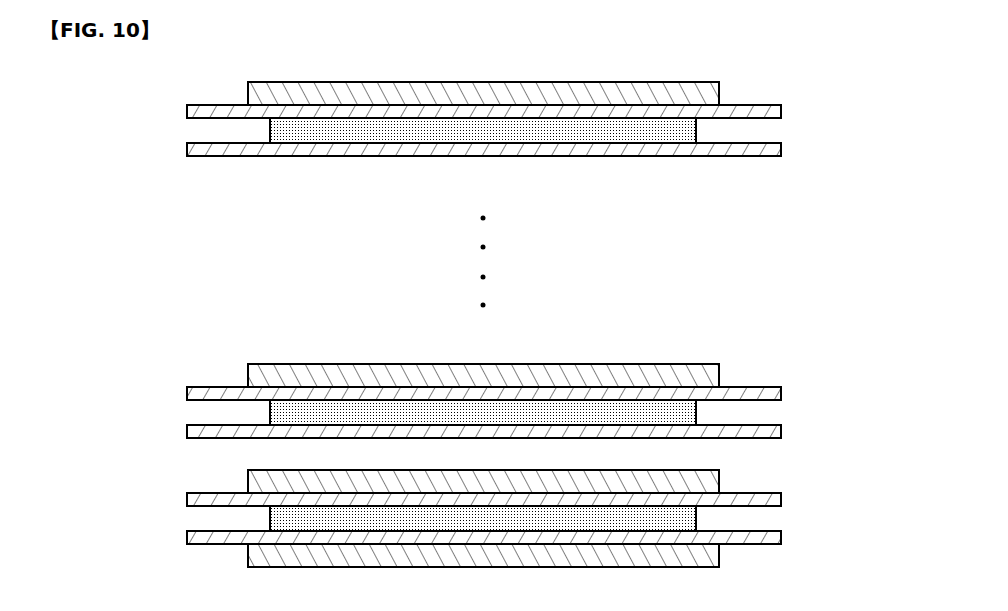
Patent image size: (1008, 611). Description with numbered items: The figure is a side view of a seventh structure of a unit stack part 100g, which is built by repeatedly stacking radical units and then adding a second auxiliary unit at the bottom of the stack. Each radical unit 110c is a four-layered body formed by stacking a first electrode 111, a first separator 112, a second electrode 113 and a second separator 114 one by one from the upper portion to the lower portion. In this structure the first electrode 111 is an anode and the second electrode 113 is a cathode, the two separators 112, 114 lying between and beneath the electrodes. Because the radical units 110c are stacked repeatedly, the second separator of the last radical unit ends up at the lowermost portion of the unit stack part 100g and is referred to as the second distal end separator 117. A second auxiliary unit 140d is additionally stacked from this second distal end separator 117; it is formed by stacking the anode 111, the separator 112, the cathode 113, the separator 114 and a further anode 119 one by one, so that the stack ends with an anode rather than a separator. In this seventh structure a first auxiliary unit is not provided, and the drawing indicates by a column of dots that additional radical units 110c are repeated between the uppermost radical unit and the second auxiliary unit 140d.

The unit stack part 100g is at (785, 85).
The radical unit 110c is at (110, 85).
The second auxiliary unit 140d is at (110, 470).
The first electrode 111 is at (277, 94).
The first separator 112 is at (193, 113).
The second electrode 113 is at (272, 135).
The second separator 114 is at (193, 146).
The second distal end separator 117 is at (193, 432).
The anode 119 is at (277, 553).